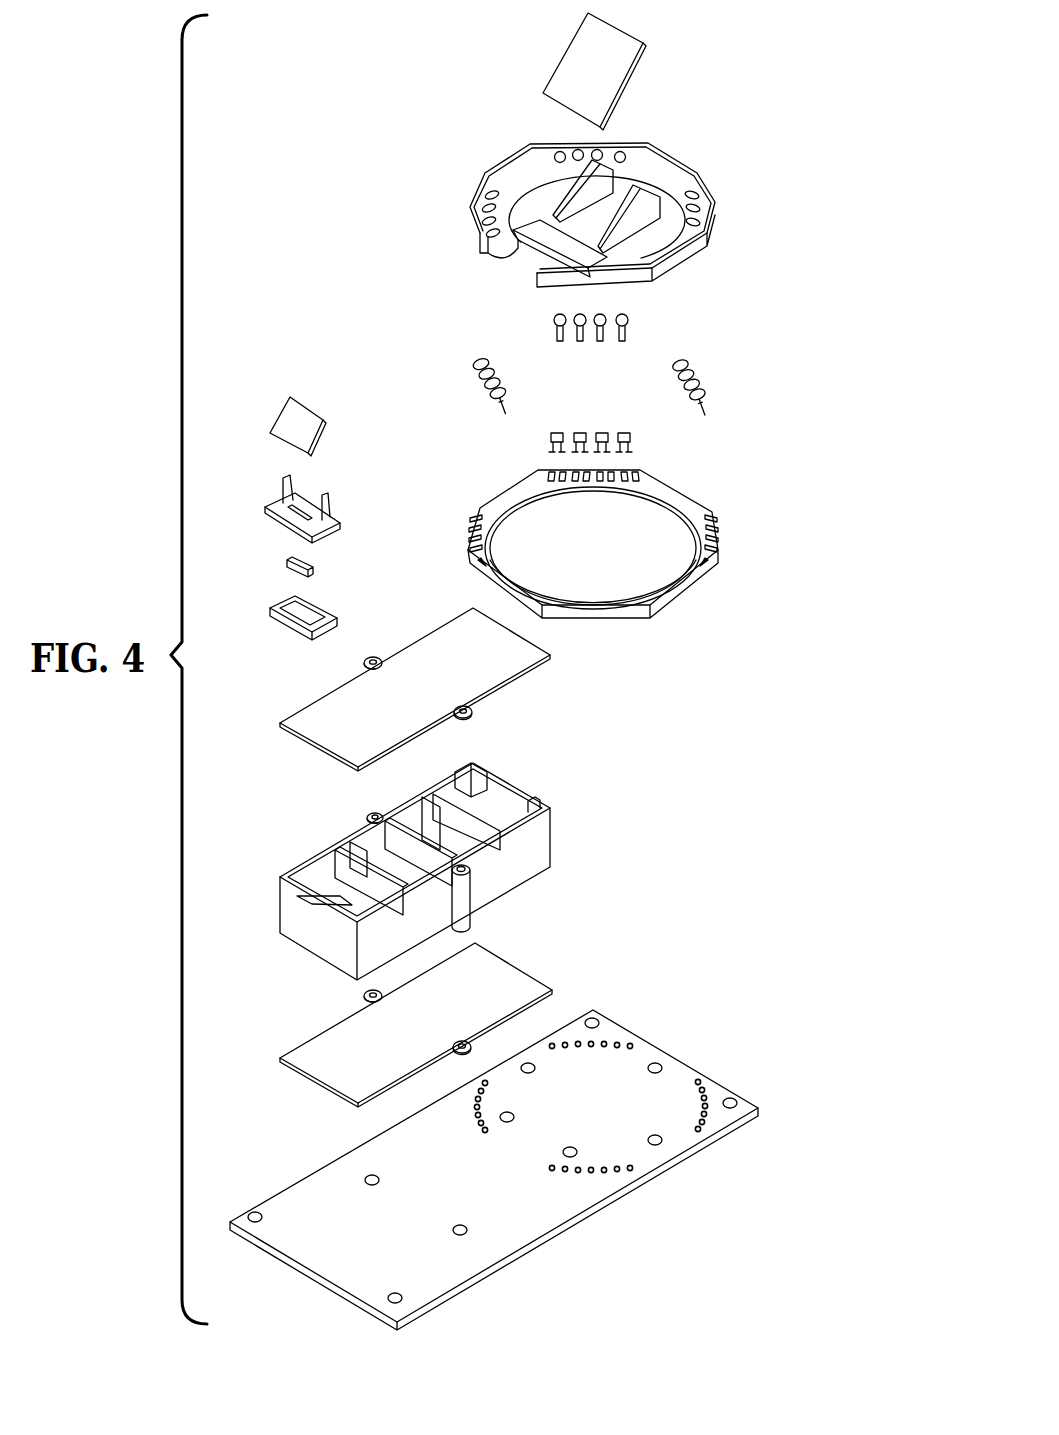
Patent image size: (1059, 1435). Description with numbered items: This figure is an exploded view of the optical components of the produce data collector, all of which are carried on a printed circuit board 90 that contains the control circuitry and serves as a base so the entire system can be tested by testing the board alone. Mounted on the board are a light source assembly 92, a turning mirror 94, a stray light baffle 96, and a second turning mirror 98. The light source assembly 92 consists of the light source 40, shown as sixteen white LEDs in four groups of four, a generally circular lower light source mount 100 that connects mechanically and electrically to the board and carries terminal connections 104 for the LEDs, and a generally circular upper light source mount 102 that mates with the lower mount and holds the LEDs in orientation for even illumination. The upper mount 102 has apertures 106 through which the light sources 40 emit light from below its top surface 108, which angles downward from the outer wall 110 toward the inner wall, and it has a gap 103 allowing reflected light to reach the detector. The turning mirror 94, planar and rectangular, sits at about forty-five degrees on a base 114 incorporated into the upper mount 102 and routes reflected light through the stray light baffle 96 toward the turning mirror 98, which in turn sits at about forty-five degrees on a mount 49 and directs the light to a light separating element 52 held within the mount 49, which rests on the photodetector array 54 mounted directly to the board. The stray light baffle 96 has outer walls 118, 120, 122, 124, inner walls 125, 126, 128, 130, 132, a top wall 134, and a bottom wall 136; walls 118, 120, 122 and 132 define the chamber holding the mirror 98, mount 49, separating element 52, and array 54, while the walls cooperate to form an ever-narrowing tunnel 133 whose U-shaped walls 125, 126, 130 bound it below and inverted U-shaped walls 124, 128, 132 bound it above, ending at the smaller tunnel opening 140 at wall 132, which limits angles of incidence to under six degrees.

The light source 40 is at (713, 348).
The mount 49 is at (341, 513).
The light separating element 52 is at (314, 567).
The photodetector array 54 is at (332, 616).
The printed circuit board 90 is at (748, 1115).
The light source assembly 92 is at (603, 205).
The turning mirror 94 is at (632, 36).
The stray light baffle 96 is at (420, 876).
The turning mirror 98 is at (308, 415).
The lower light source mount 100 is at (631, 529).
The upper light source mount 102 is at (603, 208).
The gap 103 is at (516, 262).
The terminal connections 104 is at (634, 477).
The apertures 106 is at (486, 193).
The top surface 108 is at (514, 168).
The outer wall 110 is at (470, 224).
The base 114 is at (647, 193).
The outer wall 118 is at (373, 955).
The outer wall 120 is at (310, 943).
The outer wall 122 is at (278, 878).
The outer wall 124 is at (543, 800).
The inner wall 125 is at (463, 770).
The inner wall 126 is at (417, 807).
The inner wall 128 is at (400, 810).
The inner wall 130 is at (357, 850).
The inner wall 132 is at (318, 872).
The tunnel 133 is at (510, 790).
The top wall 134 is at (312, 702).
The bottom wall 136 is at (510, 978).
The tunnel opening 140 is at (283, 913).